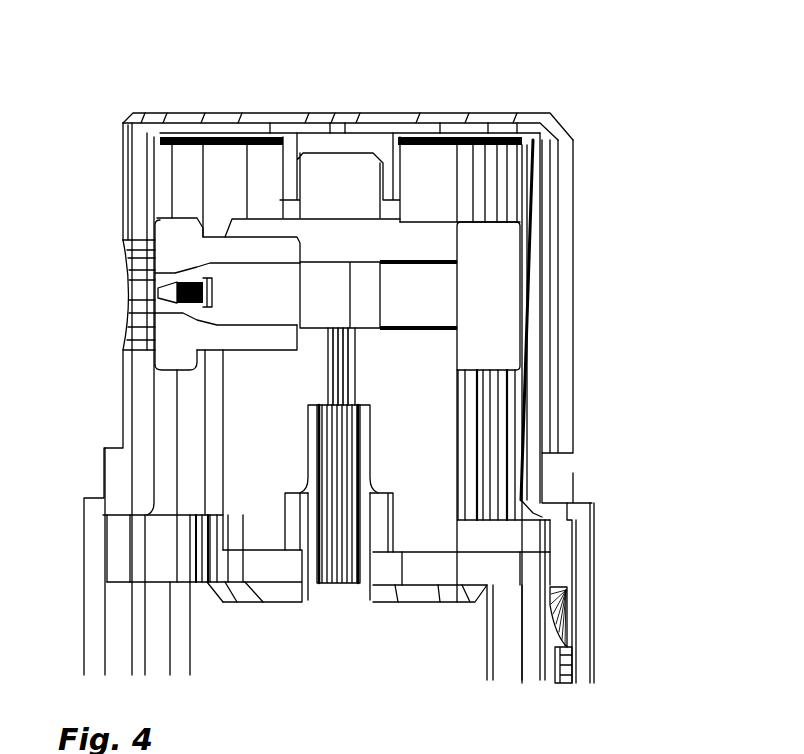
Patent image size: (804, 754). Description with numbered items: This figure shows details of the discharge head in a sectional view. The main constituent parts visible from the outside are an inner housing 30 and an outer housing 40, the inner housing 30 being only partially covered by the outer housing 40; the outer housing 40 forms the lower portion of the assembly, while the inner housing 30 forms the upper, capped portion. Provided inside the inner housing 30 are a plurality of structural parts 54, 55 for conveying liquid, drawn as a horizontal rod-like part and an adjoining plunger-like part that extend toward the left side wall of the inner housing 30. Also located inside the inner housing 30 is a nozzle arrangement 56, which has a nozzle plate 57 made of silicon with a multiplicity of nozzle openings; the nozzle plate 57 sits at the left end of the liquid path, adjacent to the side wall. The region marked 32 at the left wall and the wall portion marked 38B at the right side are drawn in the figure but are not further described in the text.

The inner housing 30 is at (166, 99).
The nozzle outlet 32 is at (137, 258).
The outer housing wall 38B is at (565, 193).
The outer housing 40 is at (345, 753).
The structural part for conveying liquid 54 is at (417, 240).
The structural part for conveying liquid 55 is at (435, 315).
The nozzle arrangement 56 is at (180, 313).
The nozzle plate 57 is at (150, 295).